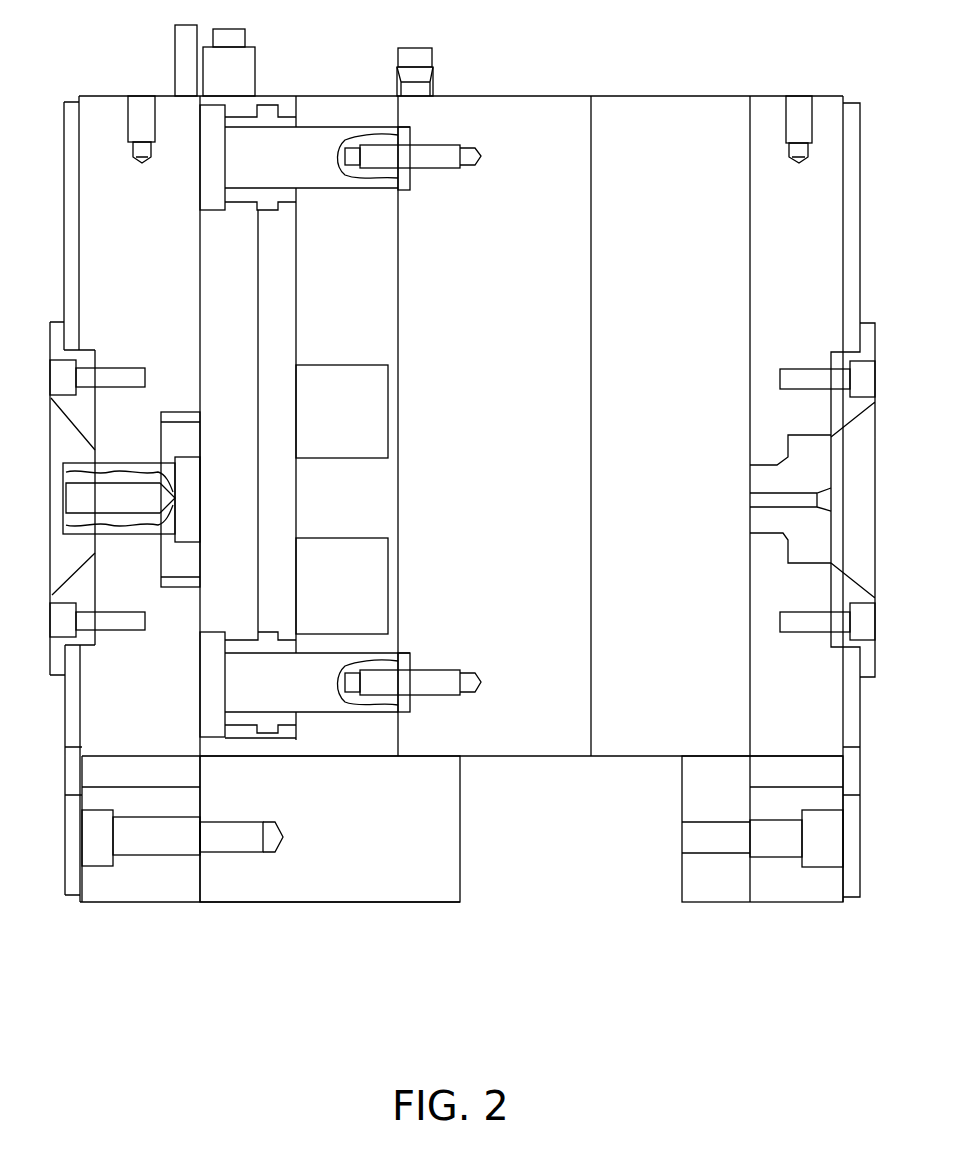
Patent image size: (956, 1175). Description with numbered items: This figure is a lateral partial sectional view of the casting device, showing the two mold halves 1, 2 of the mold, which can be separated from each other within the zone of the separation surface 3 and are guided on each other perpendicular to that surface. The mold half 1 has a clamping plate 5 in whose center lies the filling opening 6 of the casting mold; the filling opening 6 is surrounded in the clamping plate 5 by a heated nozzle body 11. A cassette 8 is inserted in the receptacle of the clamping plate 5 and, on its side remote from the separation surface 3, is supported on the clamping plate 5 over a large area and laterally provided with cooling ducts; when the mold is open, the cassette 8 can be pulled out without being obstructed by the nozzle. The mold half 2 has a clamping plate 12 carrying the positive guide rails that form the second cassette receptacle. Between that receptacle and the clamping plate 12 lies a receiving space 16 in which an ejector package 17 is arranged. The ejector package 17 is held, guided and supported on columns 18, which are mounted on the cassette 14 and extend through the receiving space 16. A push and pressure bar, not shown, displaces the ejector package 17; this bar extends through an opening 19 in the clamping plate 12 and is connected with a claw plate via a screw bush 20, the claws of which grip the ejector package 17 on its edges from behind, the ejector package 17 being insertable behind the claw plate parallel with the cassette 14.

The mold half 1 is at (733, 922).
The mold half 2 is at (247, 922).
The separation surface 3 is at (593, 740).
The clamping plate 5 is at (823, 103).
The filling opening 6 is at (757, 499).
The cassette 8 is at (668, 428).
The heated nozzle body 11 is at (840, 585).
The clamping plate 12 is at (138, 888).
The cassette 14 is at (500, 431).
The receiving space 16 is at (361, 323).
The ejector package 17 is at (240, 243).
The columns 18 is at (328, 130).
The opening 19 is at (128, 540).
The screw bush 20 is at (126, 460).